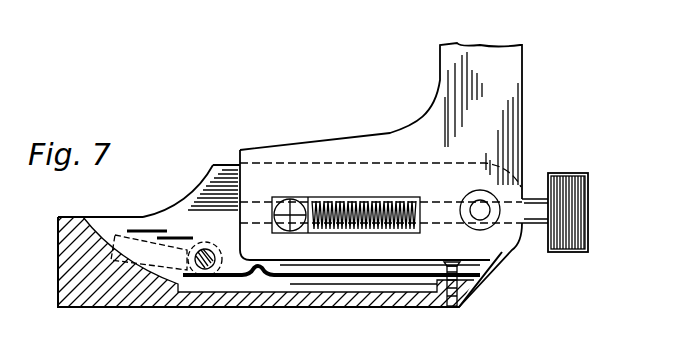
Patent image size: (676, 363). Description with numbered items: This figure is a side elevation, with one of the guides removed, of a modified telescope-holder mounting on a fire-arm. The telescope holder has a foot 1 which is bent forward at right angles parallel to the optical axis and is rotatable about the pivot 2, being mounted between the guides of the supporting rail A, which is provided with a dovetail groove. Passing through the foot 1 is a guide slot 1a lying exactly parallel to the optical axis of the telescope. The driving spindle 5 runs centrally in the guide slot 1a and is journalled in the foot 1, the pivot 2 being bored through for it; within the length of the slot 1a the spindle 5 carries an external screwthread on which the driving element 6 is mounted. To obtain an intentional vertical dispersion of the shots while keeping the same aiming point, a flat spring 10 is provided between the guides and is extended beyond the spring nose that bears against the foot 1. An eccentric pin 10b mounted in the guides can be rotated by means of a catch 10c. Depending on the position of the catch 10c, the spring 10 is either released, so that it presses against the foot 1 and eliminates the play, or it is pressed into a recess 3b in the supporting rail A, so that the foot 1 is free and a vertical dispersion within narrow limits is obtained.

The foot 1 is at (343, 150).
The guide slot 1a is at (413, 198).
The pivot 2 is at (485, 220).
The recess 3b is at (258, 280).
The driving spindle 5 is at (588, 212).
The driving element 6 is at (283, 197).
The flat spring 10 is at (342, 272).
The eccentric pin 10b is at (203, 250).
The catch 10c is at (138, 233).
The supporting rail A is at (93, 297).